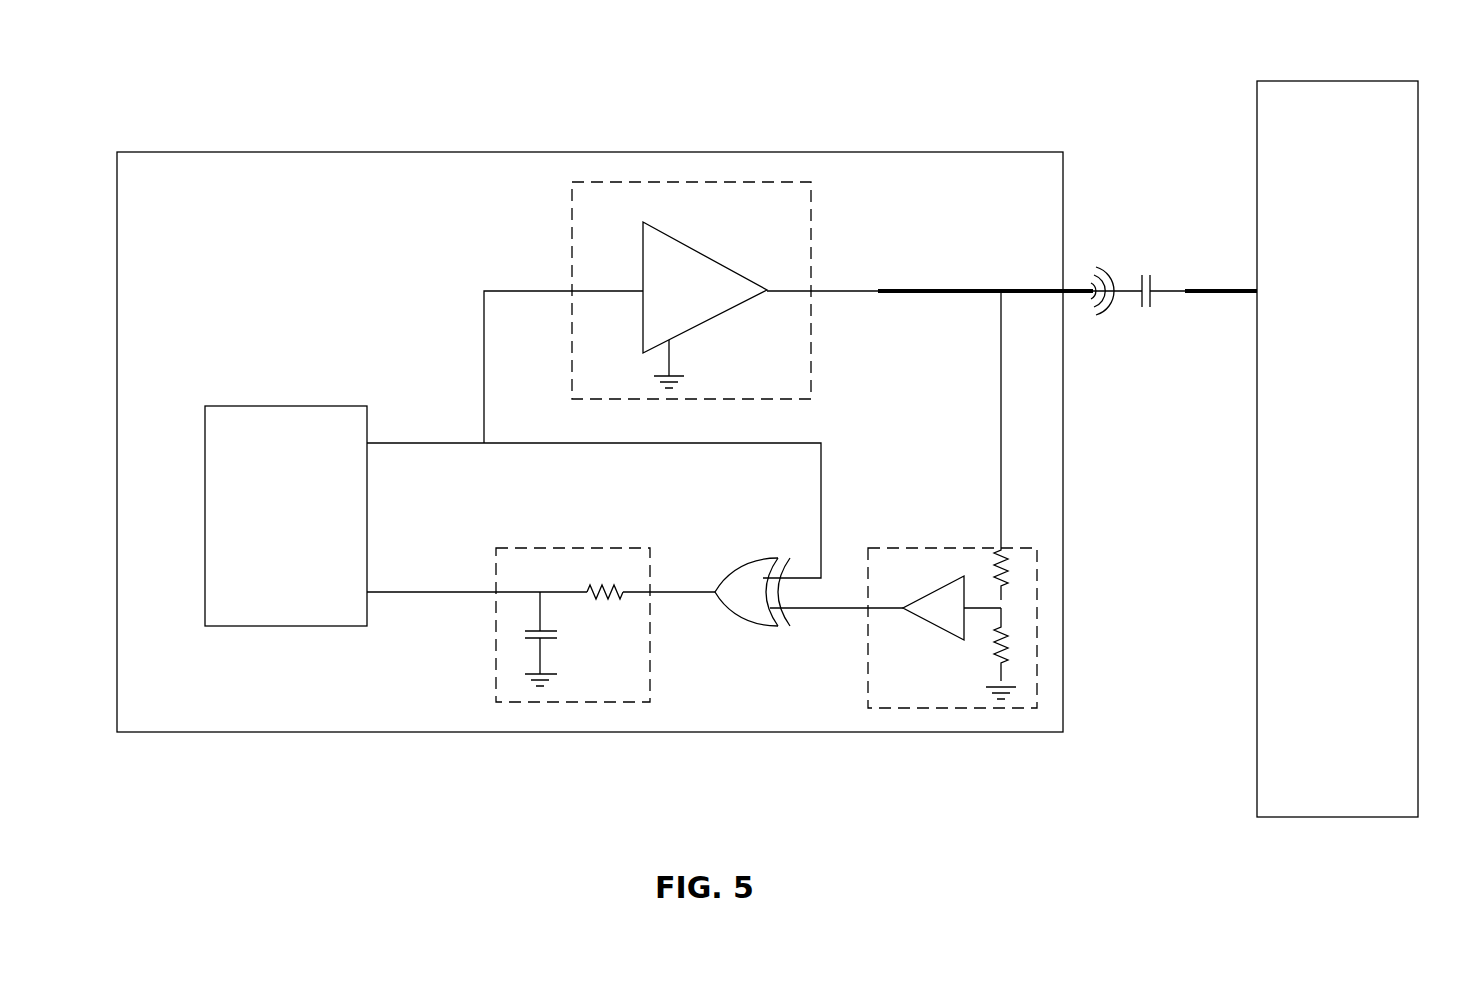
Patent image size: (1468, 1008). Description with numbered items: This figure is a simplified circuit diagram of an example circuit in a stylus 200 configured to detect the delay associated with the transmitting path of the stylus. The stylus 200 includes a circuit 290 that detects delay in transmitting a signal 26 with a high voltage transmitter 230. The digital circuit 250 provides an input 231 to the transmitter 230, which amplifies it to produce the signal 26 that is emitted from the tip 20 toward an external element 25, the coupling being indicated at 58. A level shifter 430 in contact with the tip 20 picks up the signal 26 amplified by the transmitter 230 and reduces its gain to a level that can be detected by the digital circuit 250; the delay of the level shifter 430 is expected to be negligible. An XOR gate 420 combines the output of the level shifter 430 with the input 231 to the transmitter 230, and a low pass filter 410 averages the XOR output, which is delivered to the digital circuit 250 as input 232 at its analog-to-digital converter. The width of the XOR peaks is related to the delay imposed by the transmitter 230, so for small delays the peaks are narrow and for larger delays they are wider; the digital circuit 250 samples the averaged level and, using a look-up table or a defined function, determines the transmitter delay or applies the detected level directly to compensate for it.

The stylus 200 is at (425, 152).
The circuit 290 is at (283, 266).
The digital circuit 250 is at (338, 405).
The high voltage transmitter 230 is at (723, 181).
The input to transmitter 231 is at (483, 332).
The input 232 is at (803, 440).
The low pass filter 410 is at (575, 547).
The XOR gate 420 is at (736, 548).
The level shifter 430 is at (943, 547).
The tip 20 is at (1043, 290).
The signal 26 is at (1104, 256).
The capacitive coupling to target 58 is at (1233, 290).
The target plate 25 is at (1318, 80).